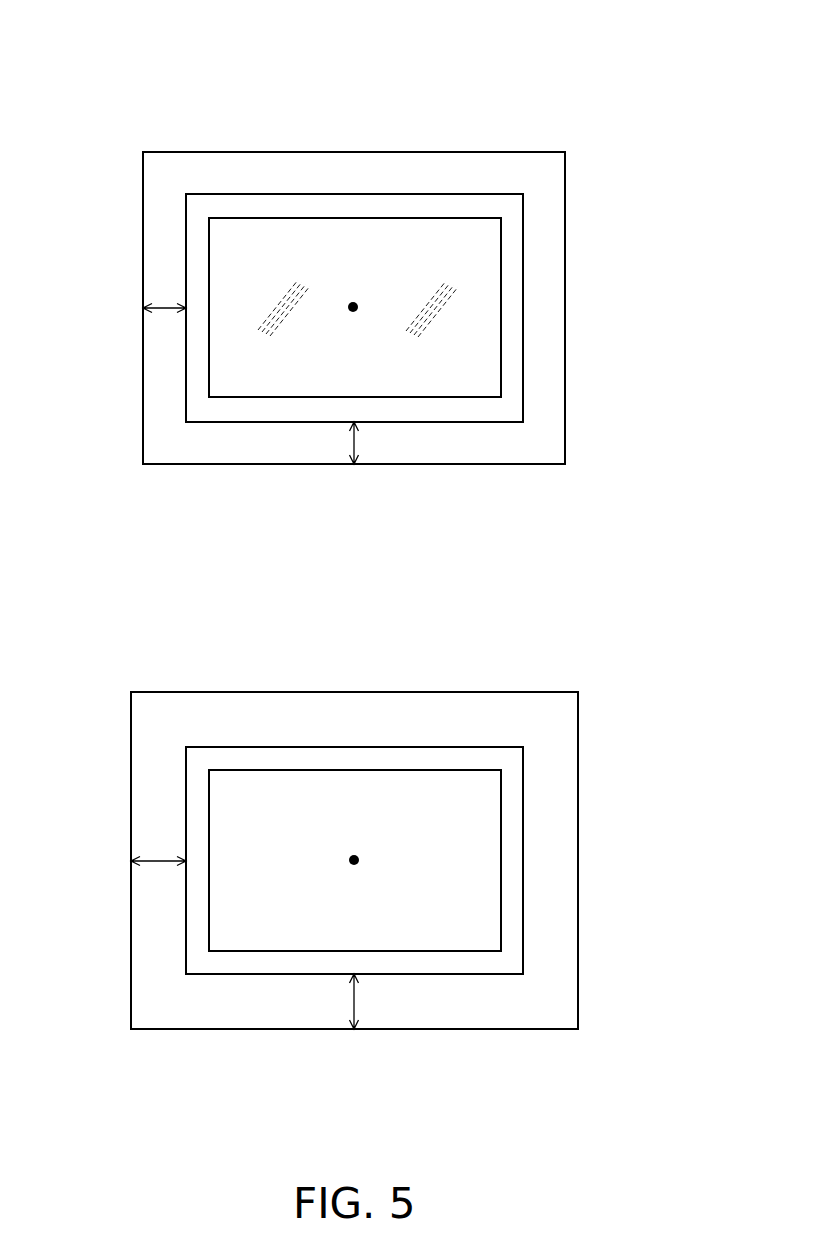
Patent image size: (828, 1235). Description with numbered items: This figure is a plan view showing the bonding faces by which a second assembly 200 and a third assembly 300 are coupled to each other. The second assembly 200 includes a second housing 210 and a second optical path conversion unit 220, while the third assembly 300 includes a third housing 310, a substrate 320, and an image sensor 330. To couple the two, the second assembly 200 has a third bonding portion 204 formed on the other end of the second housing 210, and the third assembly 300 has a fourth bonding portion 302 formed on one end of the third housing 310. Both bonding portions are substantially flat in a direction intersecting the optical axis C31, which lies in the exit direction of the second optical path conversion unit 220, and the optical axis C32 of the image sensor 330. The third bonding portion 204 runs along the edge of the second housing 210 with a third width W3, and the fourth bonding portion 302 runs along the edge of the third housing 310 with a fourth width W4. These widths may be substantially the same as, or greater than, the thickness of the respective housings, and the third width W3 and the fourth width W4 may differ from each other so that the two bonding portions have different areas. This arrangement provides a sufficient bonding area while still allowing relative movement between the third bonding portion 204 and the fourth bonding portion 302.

The second assembly 200 is at (533, 96).
The second housing 210 is at (565, 204).
The third bonding portion 204 is at (203, 440).
The second optical path conversion unit 220 is at (480, 250).
The optical axis C31 is at (358, 305).
The third width W3 is at (165, 312).
The third assembly 300 is at (533, 648).
The third housing 310 is at (578, 745).
The fourth bonding portion 302 is at (353, 910).
The substrate 320 is at (441, 958).
The image sensor 330 is at (480, 803).
The optical axis C32 is at (359, 858).
The fourth width W4 is at (158, 862).